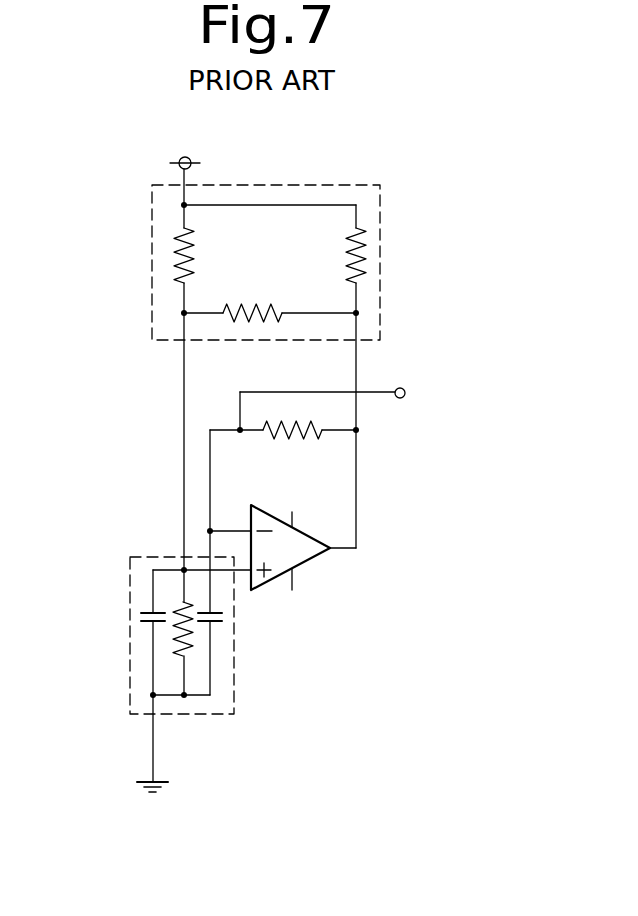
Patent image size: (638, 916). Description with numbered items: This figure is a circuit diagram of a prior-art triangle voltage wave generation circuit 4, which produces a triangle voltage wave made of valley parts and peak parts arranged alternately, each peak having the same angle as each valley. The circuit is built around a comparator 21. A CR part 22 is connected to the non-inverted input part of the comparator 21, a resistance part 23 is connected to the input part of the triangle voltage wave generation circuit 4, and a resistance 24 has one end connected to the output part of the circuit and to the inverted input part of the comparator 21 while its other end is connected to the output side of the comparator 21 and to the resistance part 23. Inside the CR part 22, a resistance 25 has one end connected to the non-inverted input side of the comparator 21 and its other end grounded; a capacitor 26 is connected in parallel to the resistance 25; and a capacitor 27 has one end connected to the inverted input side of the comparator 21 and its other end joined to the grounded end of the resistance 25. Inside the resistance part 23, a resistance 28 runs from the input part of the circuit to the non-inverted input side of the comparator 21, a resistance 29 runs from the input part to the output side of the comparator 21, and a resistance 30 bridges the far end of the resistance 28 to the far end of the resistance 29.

The triangle voltage wave generation circuit 4 is at (379, 151).
The comparator 21 is at (308, 562).
The CR part 22 is at (215, 715).
The resistance part 23 is at (381, 190).
The resistance 24 is at (287, 435).
The resistance 25 is at (190, 632).
The capacitor 26 is at (140, 613).
The capacitor 27 is at (225, 615).
The resistance 28 is at (175, 248).
The resistance 29 is at (362, 262).
The resistance 30 is at (258, 303).